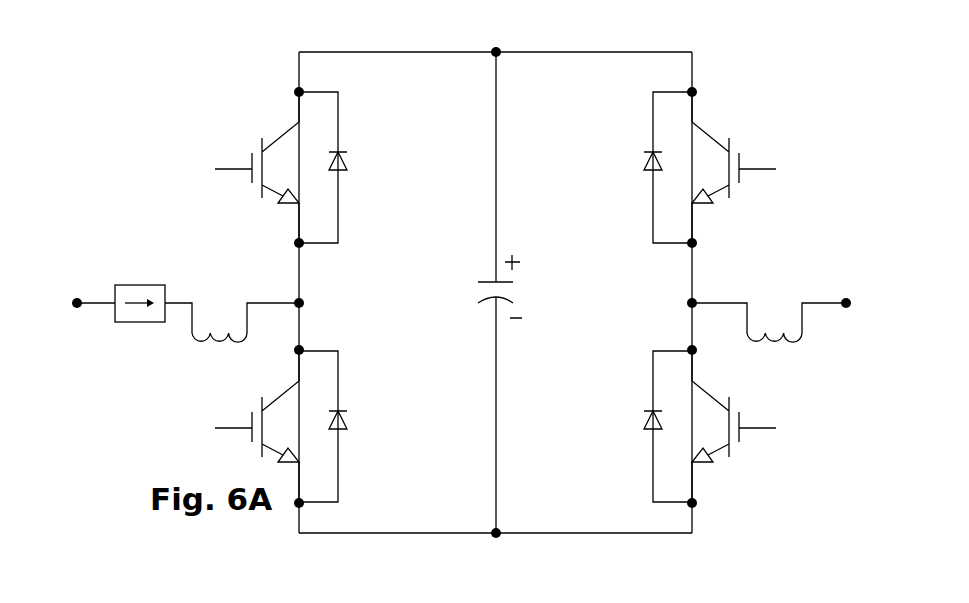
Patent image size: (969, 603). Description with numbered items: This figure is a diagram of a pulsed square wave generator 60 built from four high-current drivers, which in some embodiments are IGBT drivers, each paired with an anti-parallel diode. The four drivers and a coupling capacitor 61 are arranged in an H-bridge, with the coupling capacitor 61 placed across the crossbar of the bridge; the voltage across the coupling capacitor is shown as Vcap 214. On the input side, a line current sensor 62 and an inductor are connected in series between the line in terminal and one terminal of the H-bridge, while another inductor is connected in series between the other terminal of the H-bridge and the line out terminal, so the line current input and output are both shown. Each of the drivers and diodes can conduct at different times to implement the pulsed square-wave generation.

The pulsed square wave generator 60 is at (188, 68).
The line current sensor 62 is at (140, 283).
The coupling capacitor 61 is at (485, 308).
The Vcap 214 is at (433, 272).